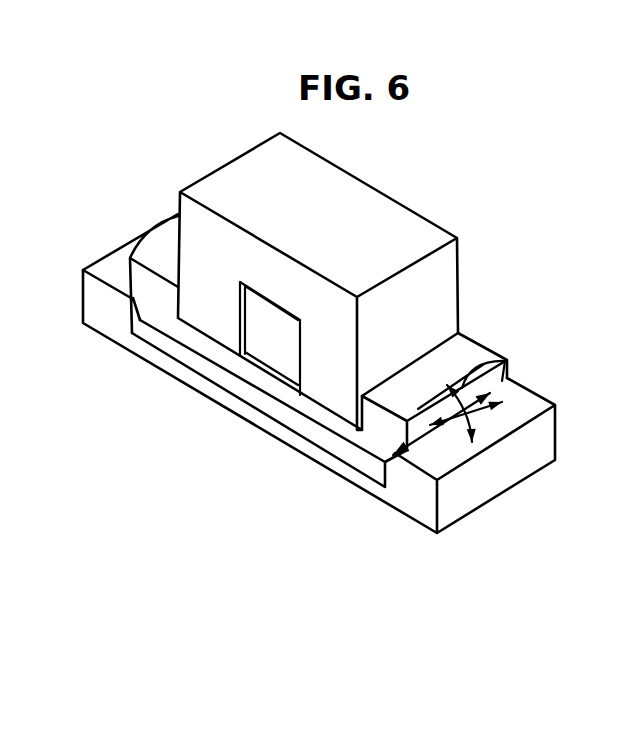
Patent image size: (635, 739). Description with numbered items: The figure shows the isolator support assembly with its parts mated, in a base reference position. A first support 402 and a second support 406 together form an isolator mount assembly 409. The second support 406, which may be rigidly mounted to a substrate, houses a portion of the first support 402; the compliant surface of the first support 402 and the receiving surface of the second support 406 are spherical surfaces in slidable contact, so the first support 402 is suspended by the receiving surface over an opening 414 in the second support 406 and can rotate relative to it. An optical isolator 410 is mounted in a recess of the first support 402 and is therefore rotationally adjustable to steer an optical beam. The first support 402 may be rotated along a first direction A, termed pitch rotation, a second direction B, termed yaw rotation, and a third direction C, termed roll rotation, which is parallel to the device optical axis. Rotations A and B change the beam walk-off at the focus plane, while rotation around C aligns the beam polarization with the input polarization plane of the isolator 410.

The first support 402 is at (472, 355).
The second support 406 is at (502, 480).
The isolator mount assembly 409 is at (118, 228).
The optical isolator 410 is at (380, 228).
The opening 414 is at (262, 394).
The first direction (pitch rotation) A is at (397, 466).
The second direction (yaw rotation) B is at (440, 407).
The third direction (roll rotation) C is at (507, 362).